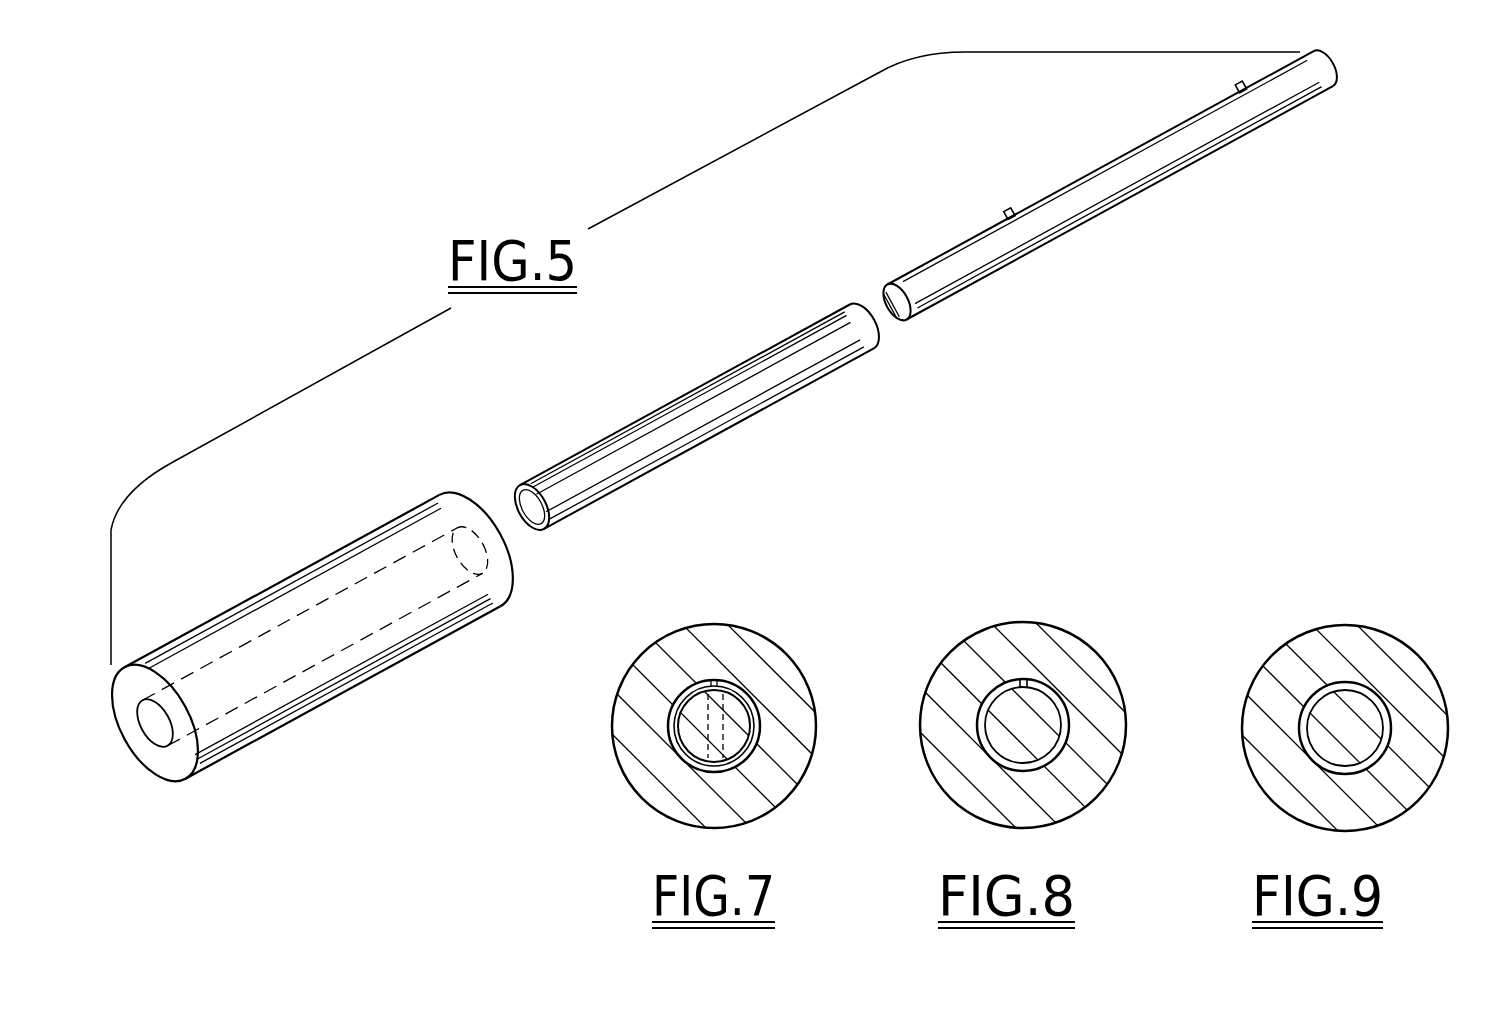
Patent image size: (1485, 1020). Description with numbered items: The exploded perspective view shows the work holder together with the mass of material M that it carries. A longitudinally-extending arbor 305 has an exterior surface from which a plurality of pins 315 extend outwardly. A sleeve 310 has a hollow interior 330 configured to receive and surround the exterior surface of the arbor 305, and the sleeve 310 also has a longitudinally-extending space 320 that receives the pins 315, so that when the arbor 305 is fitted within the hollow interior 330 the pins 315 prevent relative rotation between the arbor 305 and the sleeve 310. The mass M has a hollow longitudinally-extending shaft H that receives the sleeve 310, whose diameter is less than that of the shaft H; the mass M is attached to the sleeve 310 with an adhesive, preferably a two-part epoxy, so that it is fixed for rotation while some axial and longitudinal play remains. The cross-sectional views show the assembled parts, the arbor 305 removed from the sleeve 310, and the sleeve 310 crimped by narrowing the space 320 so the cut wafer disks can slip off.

In FIG. 5, the mass of material M is at (297, 593).
In FIG. 7, the mass of material M is at (753, 653).
In FIG. 8, the mass of material M is at (1070, 662).
In FIG. 9, the mass of material M is at (1382, 655).
In FIG. 5, the hollow longitudinally-extending shaft H is at (150, 727).
In FIG. 5, the arbor 305 is at (1107, 187).
In FIG. 7, the arbor 305 is at (730, 723).
In FIG. 5, the sleeve 310 is at (693, 434).
In FIG. 7, the sleeve 310 is at (747, 695).
In FIG. 8, the sleeve 310 is at (1070, 733).
In FIG. 9, the sleeve 310 is at (1390, 732).
In FIG. 5, the pins 315 is at (1012, 212).
In FIG. 5, the longitudinally-extending space 320 is at (825, 320).
In FIG. 8, the longitudinally-extending space 320 is at (1023, 687).
In FIG. 5, the hollow interior 330 is at (532, 530).